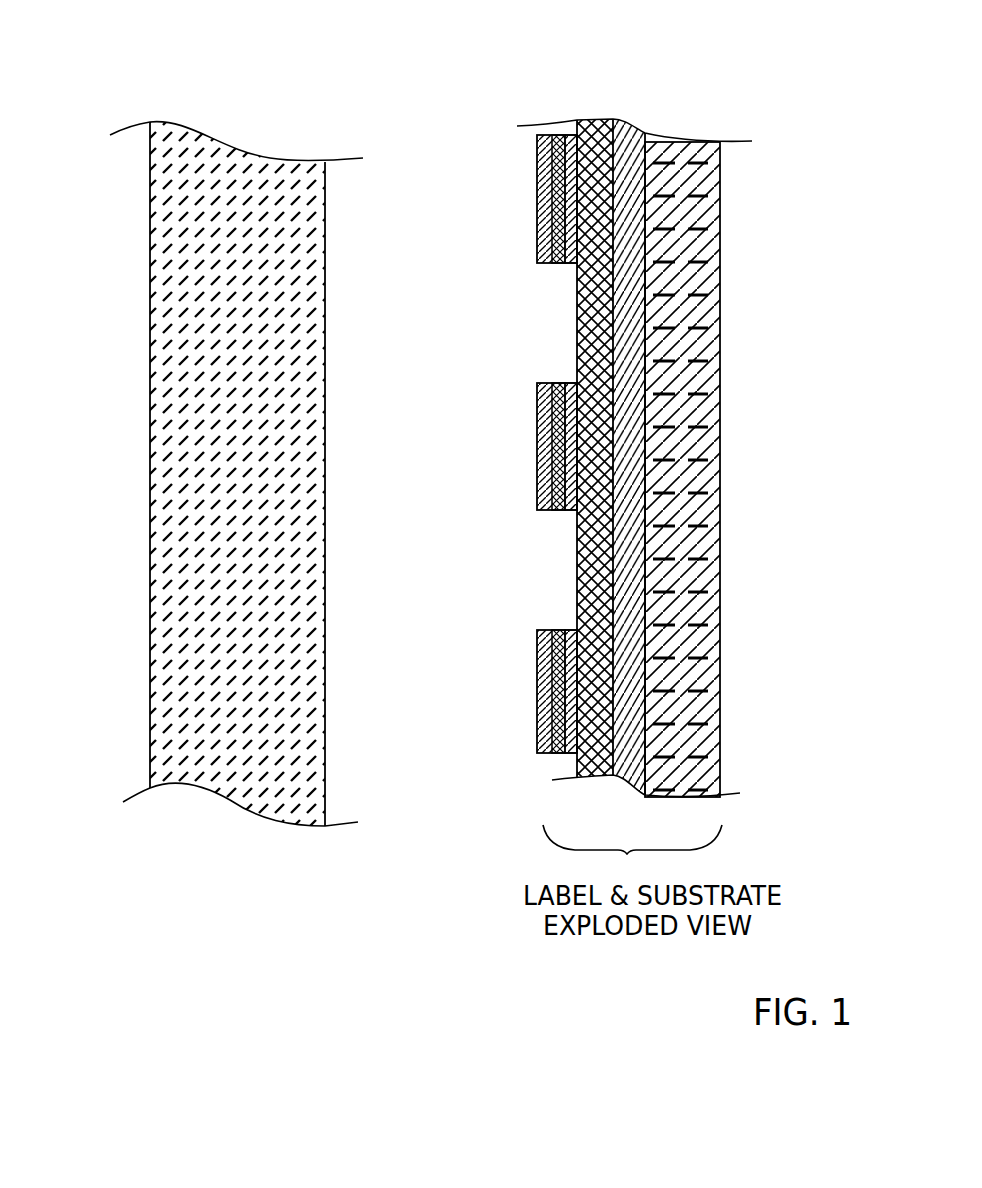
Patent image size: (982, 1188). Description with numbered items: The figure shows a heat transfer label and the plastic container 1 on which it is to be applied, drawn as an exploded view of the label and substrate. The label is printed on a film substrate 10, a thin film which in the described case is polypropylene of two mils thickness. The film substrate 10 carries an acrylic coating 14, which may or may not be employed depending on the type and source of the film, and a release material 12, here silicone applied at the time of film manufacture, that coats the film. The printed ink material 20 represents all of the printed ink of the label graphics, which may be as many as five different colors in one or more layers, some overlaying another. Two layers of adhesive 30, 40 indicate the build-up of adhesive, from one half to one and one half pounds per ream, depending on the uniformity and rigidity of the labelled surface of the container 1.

The plastic container 1 is at (175, 588).
The film substrate 10 is at (720, 390).
The release material 12 is at (662, 133).
The acrylic coating 14 is at (603, 122).
The printed ink material 20 is at (570, 135).
The adhesive layer 30 is at (552, 753).
The adhesive layer 40 is at (540, 135).